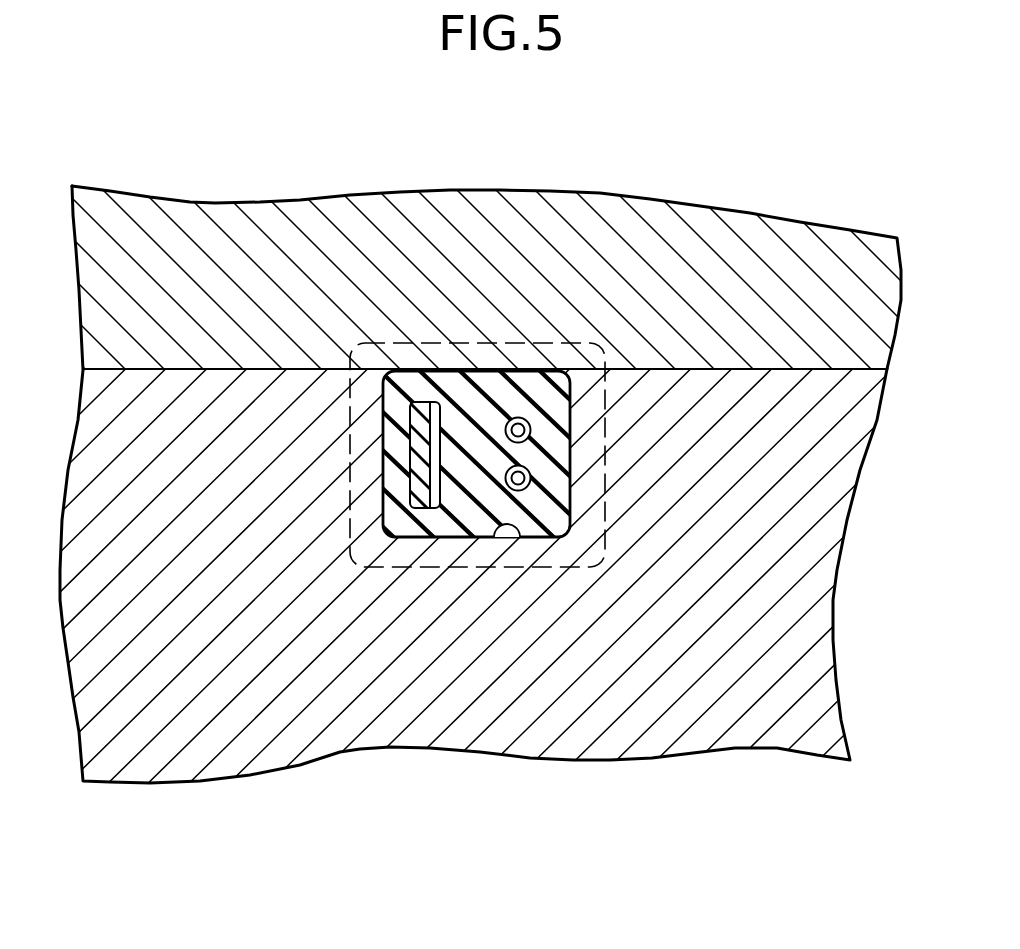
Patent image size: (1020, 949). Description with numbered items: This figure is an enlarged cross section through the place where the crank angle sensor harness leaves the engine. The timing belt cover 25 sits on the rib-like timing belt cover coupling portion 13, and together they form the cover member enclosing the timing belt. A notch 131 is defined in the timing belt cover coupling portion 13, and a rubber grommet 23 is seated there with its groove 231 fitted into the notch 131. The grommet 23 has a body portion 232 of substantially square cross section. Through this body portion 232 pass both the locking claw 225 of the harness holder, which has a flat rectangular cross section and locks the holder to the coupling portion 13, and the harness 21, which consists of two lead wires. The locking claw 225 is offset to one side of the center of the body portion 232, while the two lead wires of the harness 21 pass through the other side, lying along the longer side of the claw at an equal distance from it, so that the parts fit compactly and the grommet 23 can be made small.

The timing belt cover 25 is at (524, 214).
The timing belt cover coupling portion 13 is at (657, 747).
The grommet 23 is at (585, 349).
The groove 231 is at (461, 392).
The body portion 232 is at (558, 492).
The locking claw 225 is at (420, 430).
The harness 21 is at (532, 478).
The notch 131 is at (501, 527).